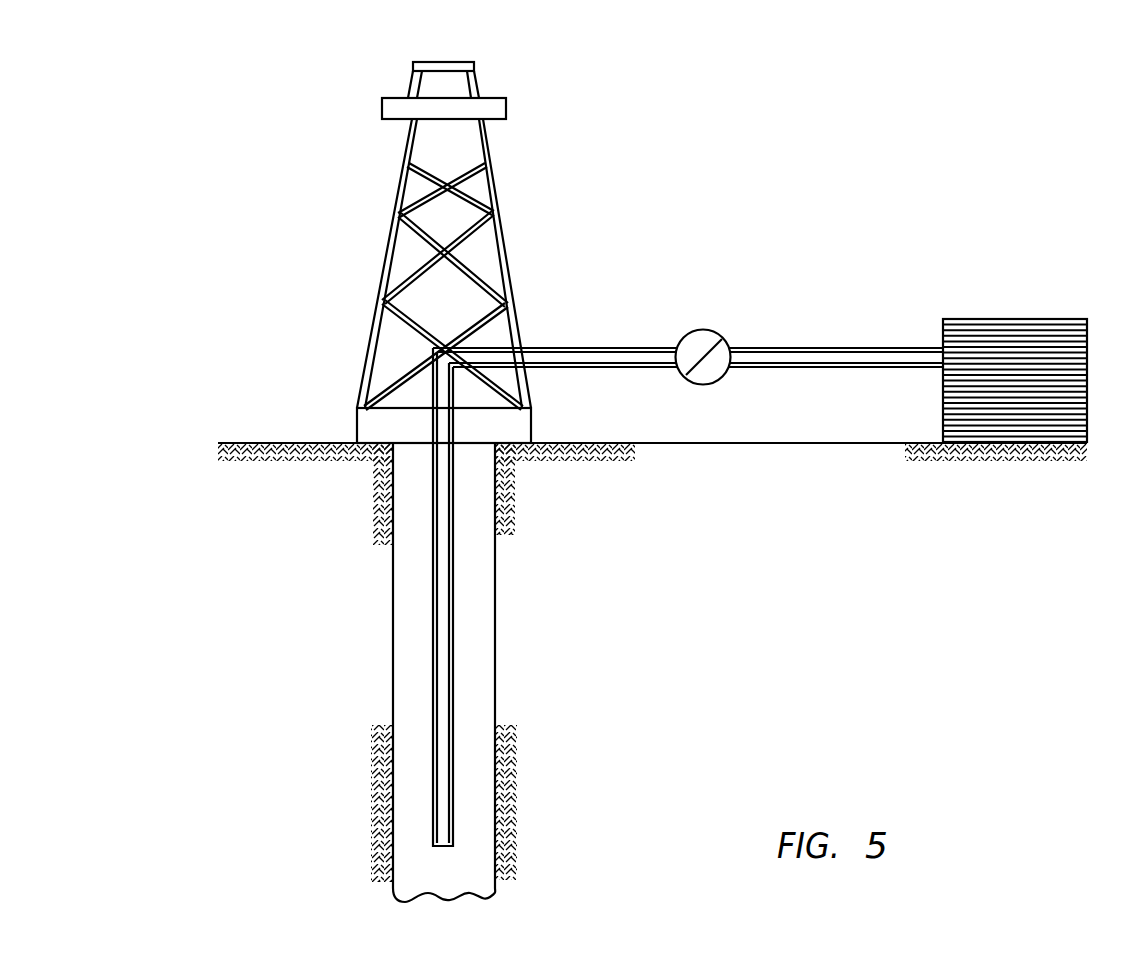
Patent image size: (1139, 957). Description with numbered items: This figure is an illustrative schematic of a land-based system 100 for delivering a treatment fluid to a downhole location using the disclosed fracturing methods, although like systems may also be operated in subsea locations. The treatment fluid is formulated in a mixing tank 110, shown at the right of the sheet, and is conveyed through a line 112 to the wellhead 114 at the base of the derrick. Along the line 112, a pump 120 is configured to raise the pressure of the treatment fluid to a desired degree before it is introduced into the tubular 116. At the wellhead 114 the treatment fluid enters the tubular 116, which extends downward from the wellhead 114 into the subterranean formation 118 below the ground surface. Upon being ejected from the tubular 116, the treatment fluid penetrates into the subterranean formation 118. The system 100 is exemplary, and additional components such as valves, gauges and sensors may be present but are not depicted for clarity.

The system 100 is at (283, 122).
The mixing tank 110 is at (1027, 318).
The line 112 is at (613, 347).
The wellhead 114 is at (357, 423).
The tubular 116 is at (455, 600).
The subterranean formation 118 is at (332, 613).
The pump 120 is at (708, 330).